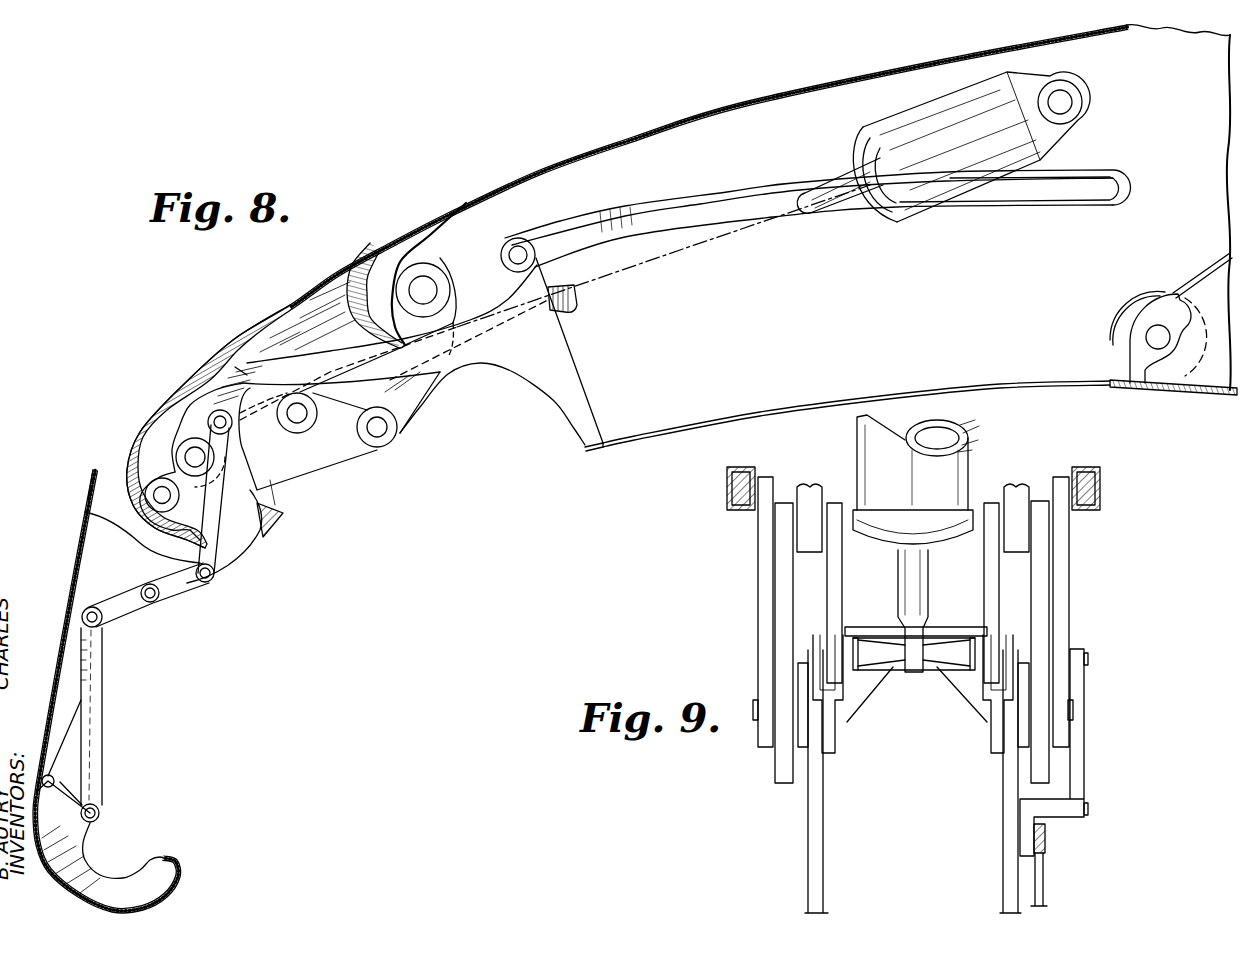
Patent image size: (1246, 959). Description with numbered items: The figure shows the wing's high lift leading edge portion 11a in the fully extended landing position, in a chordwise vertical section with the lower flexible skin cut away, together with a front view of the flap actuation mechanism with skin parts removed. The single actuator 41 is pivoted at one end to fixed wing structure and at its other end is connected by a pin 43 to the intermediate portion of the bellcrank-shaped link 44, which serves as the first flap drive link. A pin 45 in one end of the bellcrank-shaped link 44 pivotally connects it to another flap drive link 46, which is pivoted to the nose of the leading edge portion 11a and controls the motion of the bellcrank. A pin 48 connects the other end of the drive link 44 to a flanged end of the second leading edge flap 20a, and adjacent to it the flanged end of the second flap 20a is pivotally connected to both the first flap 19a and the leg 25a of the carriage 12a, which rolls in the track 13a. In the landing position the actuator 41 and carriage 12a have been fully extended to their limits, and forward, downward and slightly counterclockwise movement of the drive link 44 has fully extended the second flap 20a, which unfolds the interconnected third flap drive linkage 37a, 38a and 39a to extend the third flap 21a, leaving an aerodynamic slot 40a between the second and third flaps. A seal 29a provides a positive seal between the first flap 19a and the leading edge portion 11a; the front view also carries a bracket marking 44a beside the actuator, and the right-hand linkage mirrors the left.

In FIG. 8, the leading edge portion 11a is at (637, 138).
In FIG. 8, the carriage 12a is at (560, 356).
In FIG. 9, the track 13a is at (1100, 496).
In FIG. 8, the first flap 19a is at (340, 350).
In FIG. 9, the first flap 19a is at (1037, 597).
In FIG. 8, the second leading edge flap 20a is at (126, 577).
In FIG. 9, the second leading edge flap 20a is at (1005, 790).
In FIG. 8, the third flap 21a is at (75, 815).
In FIG. 8, the leg of carriage 25a is at (247, 377).
In FIG. 9, the leg of carriage 25a is at (1062, 543).
In FIG. 8, the seal 29a is at (383, 287).
In FIG. 8, the third flap drive linkage 37a is at (103, 722).
In FIG. 9, the third flap drive linkage 37a is at (1040, 880).
In FIG. 8, the third flap drive linkage 38a is at (168, 595).
In FIG. 9, the third flap drive linkage 38a is at (1040, 846).
In FIG. 8, the third flap drive linkage 39a is at (212, 537).
In FIG. 9, the third flap drive linkage 39a is at (1086, 760).
In FIG. 8, the aerodynamic slot 40a is at (117, 475).
In FIG. 8, the single actuator 41 is at (936, 164).
In FIG. 9, the single actuator 41 is at (934, 484).
In FIG. 8, the pin 43 is at (300, 407).
In FIG. 8, the bellcrank-shaped link 44 is at (322, 456).
In FIG. 9, the pivot bracket 44a is at (988, 722).
In FIG. 8, the pin 45 is at (380, 430).
In FIG. 8, the flap drive link 46 is at (424, 402).
In FIG. 8, the pin 48 is at (142, 438).